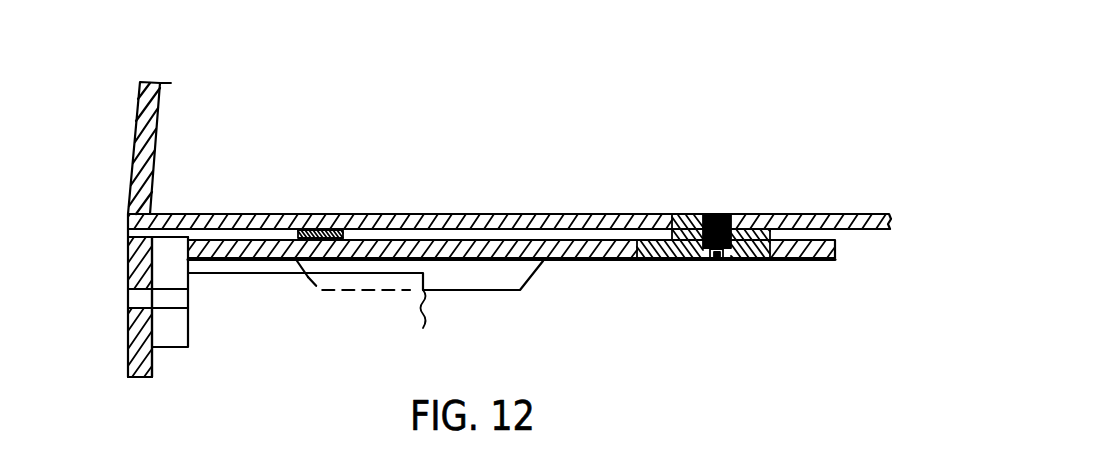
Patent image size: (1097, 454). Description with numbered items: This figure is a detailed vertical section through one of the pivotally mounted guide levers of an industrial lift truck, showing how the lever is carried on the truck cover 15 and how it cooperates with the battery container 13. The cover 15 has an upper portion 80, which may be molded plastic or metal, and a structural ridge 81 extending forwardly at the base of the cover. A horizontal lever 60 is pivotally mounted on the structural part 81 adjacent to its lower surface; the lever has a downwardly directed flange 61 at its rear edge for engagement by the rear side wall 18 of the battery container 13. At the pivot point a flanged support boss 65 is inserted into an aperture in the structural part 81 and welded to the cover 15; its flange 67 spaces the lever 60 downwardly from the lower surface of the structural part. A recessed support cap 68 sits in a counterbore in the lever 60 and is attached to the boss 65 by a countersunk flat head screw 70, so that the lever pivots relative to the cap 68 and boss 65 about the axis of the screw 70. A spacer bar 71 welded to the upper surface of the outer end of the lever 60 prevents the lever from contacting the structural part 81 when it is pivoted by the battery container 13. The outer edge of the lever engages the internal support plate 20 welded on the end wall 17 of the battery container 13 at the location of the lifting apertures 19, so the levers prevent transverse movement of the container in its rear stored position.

The battery container 13 is at (126, 344).
The cover 15 is at (136, 101).
The end wall 17 is at (152, 369).
The side wall 18 is at (212, 291).
The aperture 19 is at (178, 298).
The internal support plate 20 is at (174, 331).
The horizontal lever 60 is at (563, 252).
The downwardly directed flange 61 is at (481, 283).
The flanged support boss 65 is at (702, 215).
The flange 67 is at (673, 216).
The recessed support cap 68 is at (660, 259).
The countersunk flat head screw 70 is at (733, 262).
The spacer bar 71 is at (318, 229).
The upper portion 80 is at (152, 128).
The structural ridge 81 is at (500, 214).